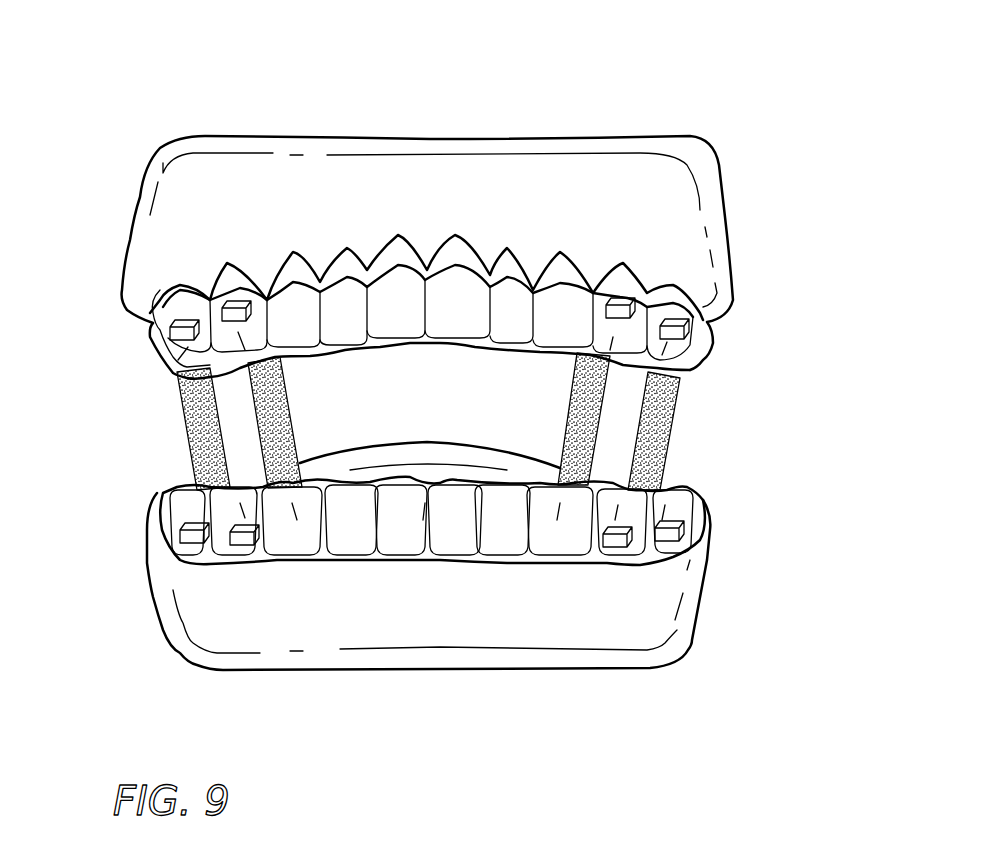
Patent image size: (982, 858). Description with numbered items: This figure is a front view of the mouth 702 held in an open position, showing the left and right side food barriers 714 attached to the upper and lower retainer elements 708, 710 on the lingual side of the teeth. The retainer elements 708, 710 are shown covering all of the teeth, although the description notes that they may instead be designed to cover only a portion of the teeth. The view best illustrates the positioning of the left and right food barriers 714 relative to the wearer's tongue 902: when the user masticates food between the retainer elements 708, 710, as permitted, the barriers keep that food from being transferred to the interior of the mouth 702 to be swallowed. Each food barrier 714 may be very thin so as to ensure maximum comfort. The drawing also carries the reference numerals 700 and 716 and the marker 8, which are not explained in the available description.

The dental appliance assembly 700 is at (757, 305).
The upper tray 702 is at (447, 178).
The upper dental arch 708 is at (432, 353).
The lower tray 710 is at (459, 482).
The connecting posts 714 is at (275, 440).
The brackets 716 is at (228, 315).
The lower tray lip 902 is at (427, 445).
The section line 8- 8 is at (428, 5).